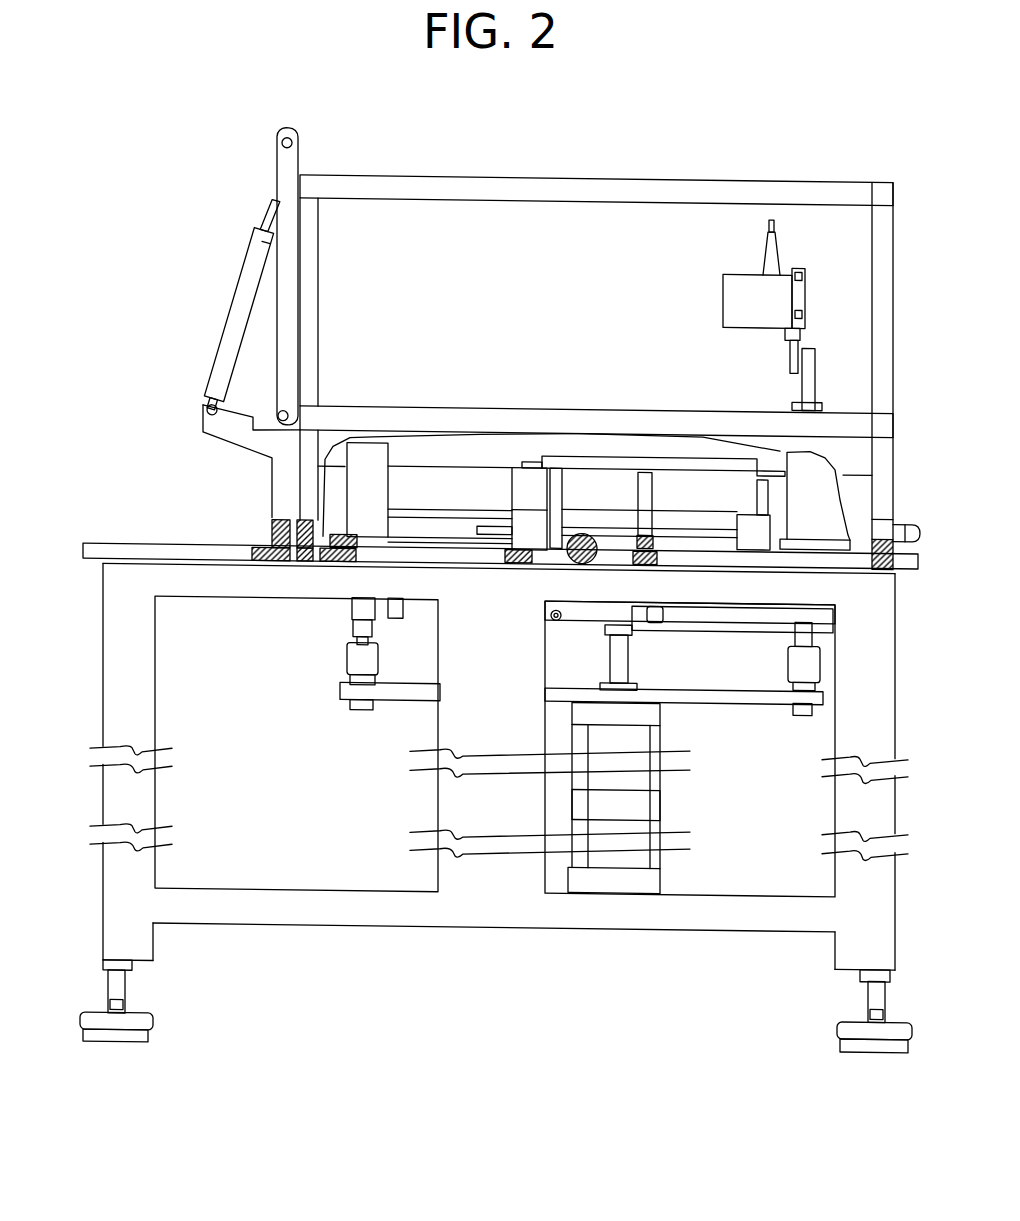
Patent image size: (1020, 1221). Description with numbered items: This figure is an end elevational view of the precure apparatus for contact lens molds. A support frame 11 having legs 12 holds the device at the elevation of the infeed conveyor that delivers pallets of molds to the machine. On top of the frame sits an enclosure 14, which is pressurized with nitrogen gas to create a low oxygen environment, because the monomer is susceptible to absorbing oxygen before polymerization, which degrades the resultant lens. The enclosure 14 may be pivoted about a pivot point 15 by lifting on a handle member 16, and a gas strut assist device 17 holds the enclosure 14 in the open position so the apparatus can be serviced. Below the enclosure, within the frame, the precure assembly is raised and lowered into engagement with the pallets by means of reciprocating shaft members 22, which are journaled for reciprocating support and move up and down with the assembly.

The support frame 11 is at (318, 817).
The legs 12 is at (122, 651).
The enclosure 14 is at (550, 304).
The pivot point 15 is at (297, 408).
The handle member 16 is at (905, 525).
The gas strut assist device 17 is at (245, 289).
The reciprocating shaft members 22 is at (352, 617).